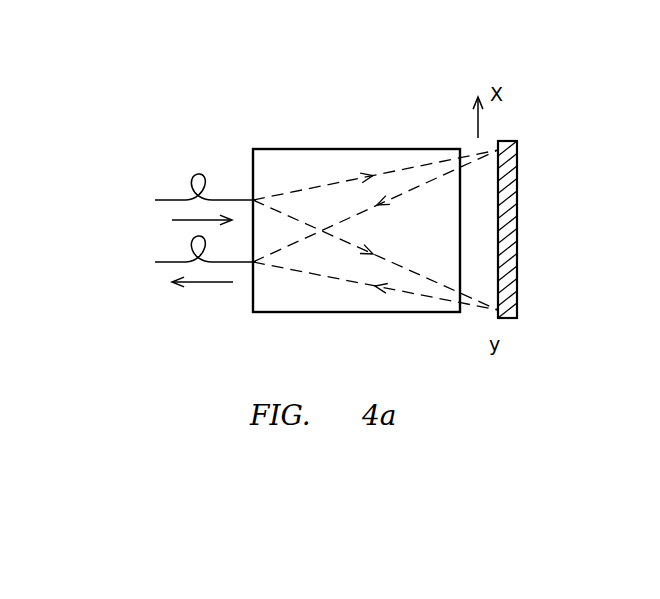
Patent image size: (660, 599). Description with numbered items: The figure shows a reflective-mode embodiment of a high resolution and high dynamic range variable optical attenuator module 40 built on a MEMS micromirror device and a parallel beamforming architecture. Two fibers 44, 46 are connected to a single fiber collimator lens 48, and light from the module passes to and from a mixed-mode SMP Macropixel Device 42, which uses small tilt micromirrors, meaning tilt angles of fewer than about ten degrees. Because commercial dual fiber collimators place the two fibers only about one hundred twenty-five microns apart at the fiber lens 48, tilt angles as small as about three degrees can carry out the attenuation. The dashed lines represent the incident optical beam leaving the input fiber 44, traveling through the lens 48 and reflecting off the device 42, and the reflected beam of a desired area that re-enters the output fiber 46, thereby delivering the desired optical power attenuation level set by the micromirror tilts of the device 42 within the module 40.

The VOA module 40 is at (378, 125).
The mixed-mode SMP Macropixel Device 42 is at (517, 256).
The input fiber 44 is at (172, 200).
The output fiber 46 is at (172, 262).
The fiber collimator lens 48 is at (340, 312).